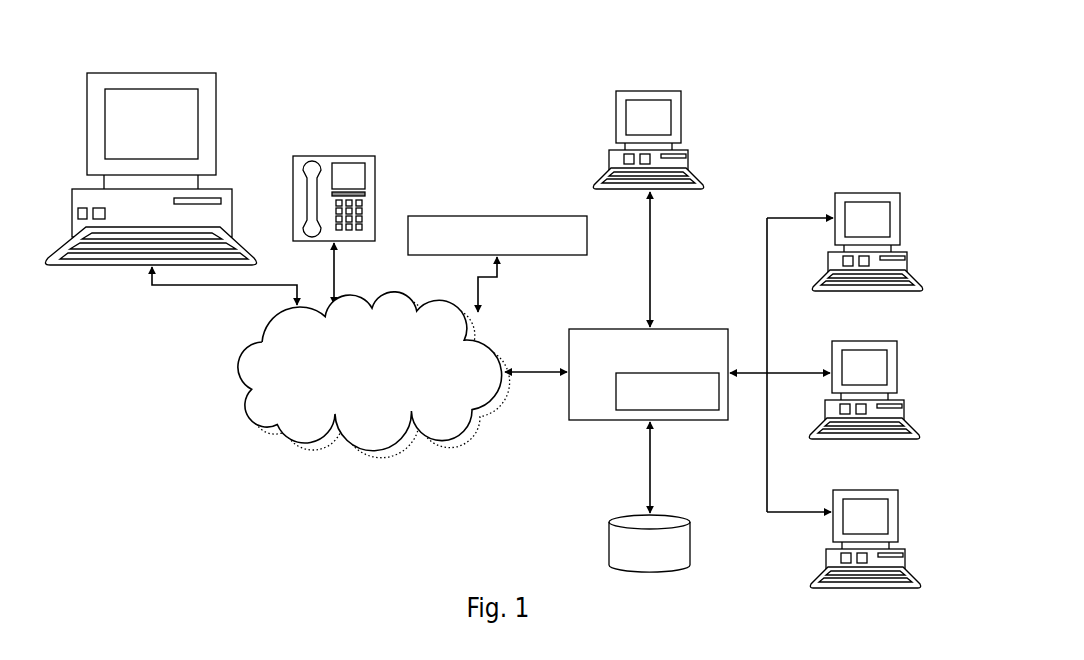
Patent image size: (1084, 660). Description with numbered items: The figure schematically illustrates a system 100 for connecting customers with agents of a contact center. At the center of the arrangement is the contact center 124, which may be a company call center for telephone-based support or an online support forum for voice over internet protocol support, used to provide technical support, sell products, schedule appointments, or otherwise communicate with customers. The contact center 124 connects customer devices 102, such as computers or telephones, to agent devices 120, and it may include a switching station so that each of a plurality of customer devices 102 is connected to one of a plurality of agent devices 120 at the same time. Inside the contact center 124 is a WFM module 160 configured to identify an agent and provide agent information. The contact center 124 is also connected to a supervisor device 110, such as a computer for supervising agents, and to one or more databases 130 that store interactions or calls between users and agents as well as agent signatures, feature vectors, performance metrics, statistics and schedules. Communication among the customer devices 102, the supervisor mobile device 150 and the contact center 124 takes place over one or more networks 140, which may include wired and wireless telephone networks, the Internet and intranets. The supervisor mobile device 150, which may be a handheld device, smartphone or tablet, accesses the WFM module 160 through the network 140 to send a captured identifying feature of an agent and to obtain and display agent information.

The system 100 is at (880, 65).
The customer device 102 is at (332, 158).
The supervisor device 110 is at (683, 116).
The agent device 120 is at (875, 193).
The contact center 124 is at (592, 363).
The database 130 is at (632, 557).
The network 140 is at (360, 392).
The supervisor mobile device 150 is at (498, 215).
The WFM module 160 is at (649, 404).